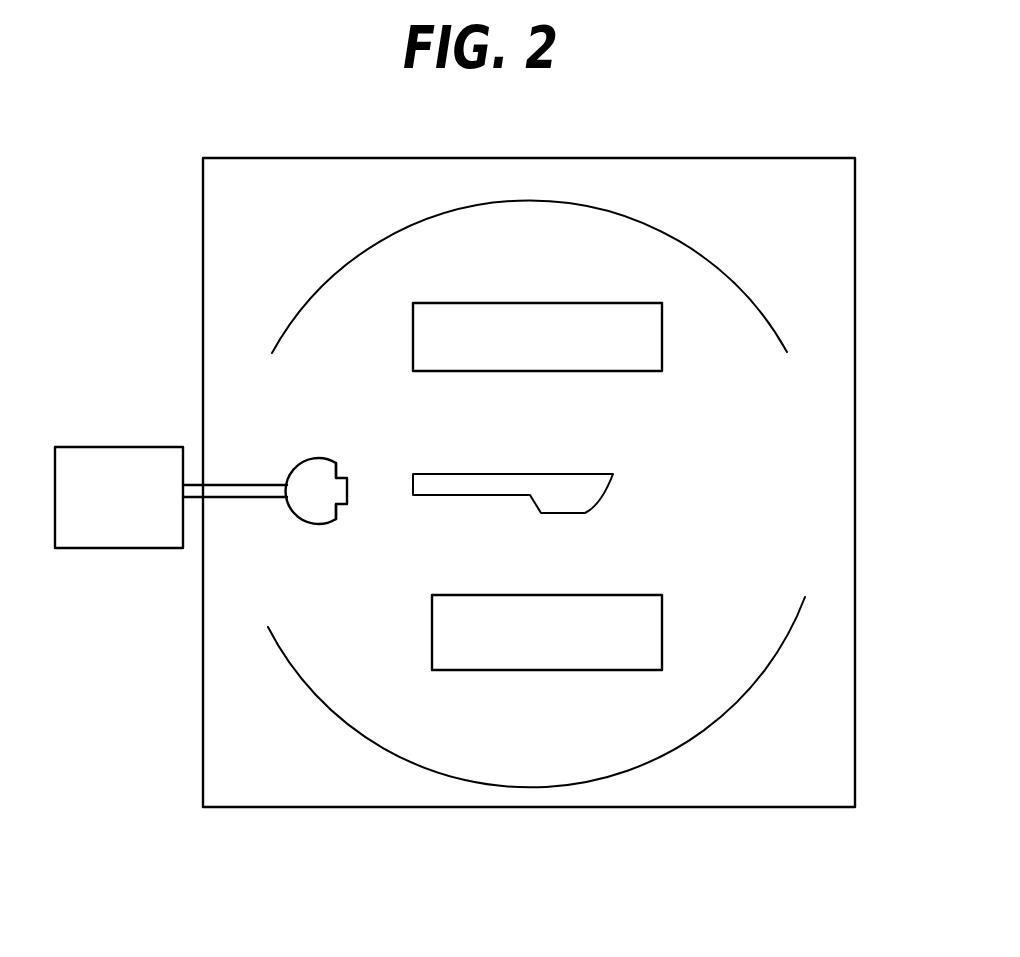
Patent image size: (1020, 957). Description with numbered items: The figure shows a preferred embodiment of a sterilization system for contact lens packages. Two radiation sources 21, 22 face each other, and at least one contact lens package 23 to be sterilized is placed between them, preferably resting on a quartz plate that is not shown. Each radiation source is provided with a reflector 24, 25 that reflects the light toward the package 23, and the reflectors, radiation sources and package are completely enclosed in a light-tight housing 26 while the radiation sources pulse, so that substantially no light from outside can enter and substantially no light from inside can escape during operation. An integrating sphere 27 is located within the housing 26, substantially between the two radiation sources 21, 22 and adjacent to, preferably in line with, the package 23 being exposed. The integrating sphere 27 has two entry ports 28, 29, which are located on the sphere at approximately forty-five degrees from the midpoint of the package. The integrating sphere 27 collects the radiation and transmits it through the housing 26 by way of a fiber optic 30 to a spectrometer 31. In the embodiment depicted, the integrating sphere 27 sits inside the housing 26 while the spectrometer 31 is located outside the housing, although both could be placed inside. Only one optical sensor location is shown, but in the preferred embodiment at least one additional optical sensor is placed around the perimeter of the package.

The radiation source 21 is at (662, 361).
The radiation source 22 is at (662, 615).
The contact lens package 23 is at (610, 485).
The reflector 24 is at (712, 262).
The reflector 25 is at (700, 733).
The light-tight housing 26 is at (710, 808).
The integrating sphere 27 is at (290, 505).
The entry port 28 is at (333, 473).
The entry port 29 is at (335, 505).
The fiber optic 30 is at (220, 485).
The spectrometer 31 is at (122, 550).